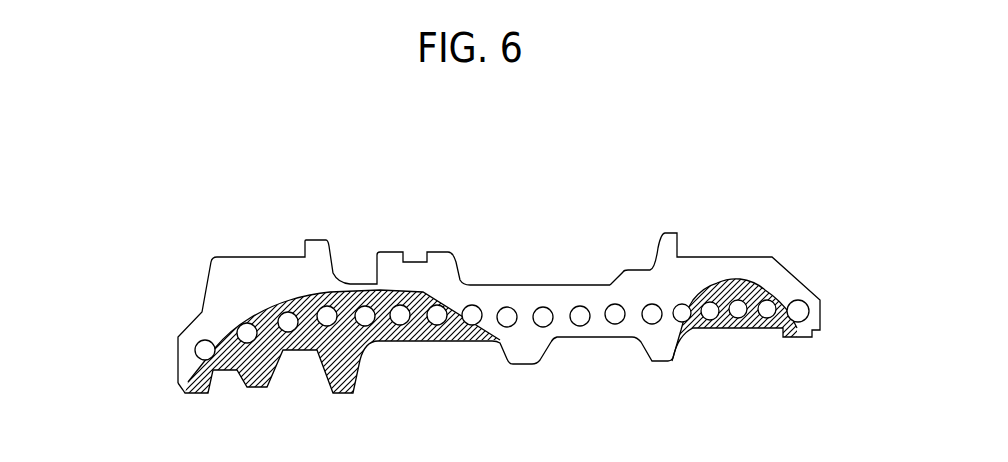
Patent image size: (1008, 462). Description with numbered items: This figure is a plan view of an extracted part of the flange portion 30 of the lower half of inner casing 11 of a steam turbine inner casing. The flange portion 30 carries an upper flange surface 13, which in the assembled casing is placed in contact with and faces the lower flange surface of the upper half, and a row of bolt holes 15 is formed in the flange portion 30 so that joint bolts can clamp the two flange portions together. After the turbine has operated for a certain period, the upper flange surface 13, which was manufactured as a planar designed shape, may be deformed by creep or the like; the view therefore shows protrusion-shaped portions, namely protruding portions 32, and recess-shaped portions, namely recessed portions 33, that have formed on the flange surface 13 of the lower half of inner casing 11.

The lower half of inner casing 11 is at (730, 226).
The upper flange surface 13 is at (223, 283).
The bolt hole 15 is at (195, 352).
The flange portion 30 is at (503, 285).
The protruding portion 32 is at (437, 343).
The recessed portion 33 is at (740, 328).